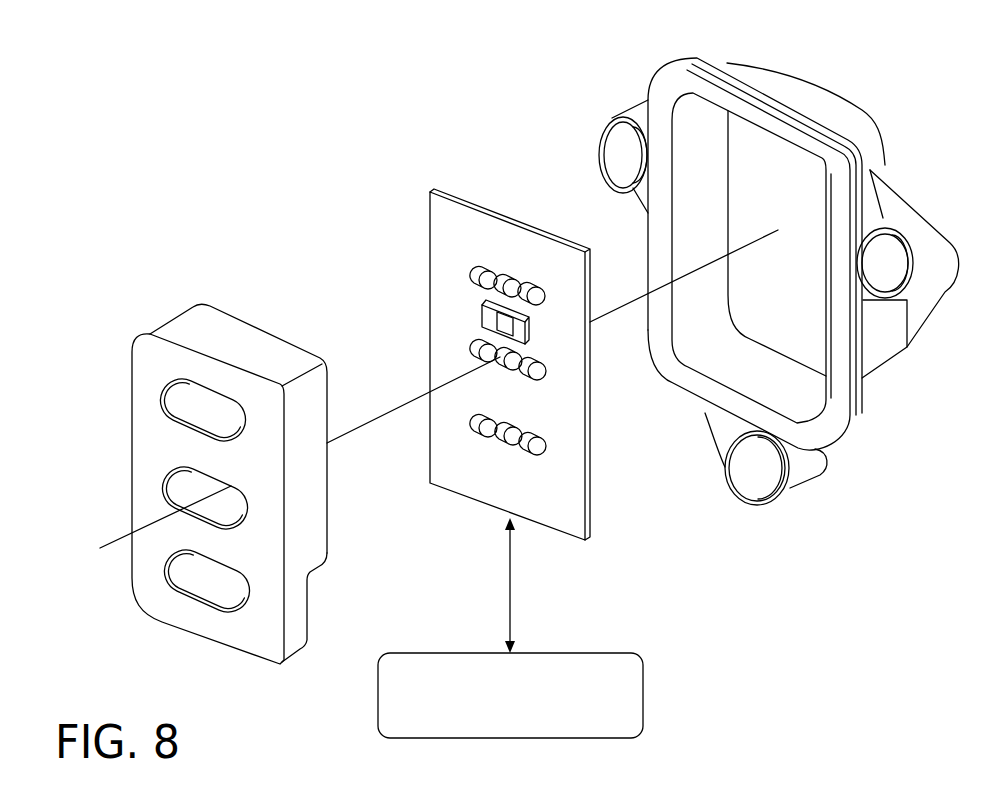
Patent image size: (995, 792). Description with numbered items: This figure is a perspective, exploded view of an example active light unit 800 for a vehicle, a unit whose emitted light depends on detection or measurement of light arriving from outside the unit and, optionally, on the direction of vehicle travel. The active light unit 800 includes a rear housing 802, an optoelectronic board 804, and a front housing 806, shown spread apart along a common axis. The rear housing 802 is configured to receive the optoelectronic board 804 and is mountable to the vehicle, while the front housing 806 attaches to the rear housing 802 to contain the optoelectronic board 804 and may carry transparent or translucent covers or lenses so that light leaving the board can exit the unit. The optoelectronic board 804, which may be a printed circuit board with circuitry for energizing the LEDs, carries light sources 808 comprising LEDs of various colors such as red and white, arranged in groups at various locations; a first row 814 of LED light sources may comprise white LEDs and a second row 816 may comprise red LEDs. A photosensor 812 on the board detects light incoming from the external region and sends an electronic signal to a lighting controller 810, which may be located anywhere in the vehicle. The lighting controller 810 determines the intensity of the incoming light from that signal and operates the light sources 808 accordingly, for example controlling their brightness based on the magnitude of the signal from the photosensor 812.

The active light unit 800 is at (203, 139).
The rear housing 802 is at (655, 80).
The optoelectronic board 804 is at (430, 246).
The front housing 806 is at (160, 326).
The light sources 808 is at (478, 268).
The lighting controller 810 is at (530, 726).
The photosensor 812 is at (481, 305).
The first row 814 is at (558, 458).
The second row 816 is at (560, 379).